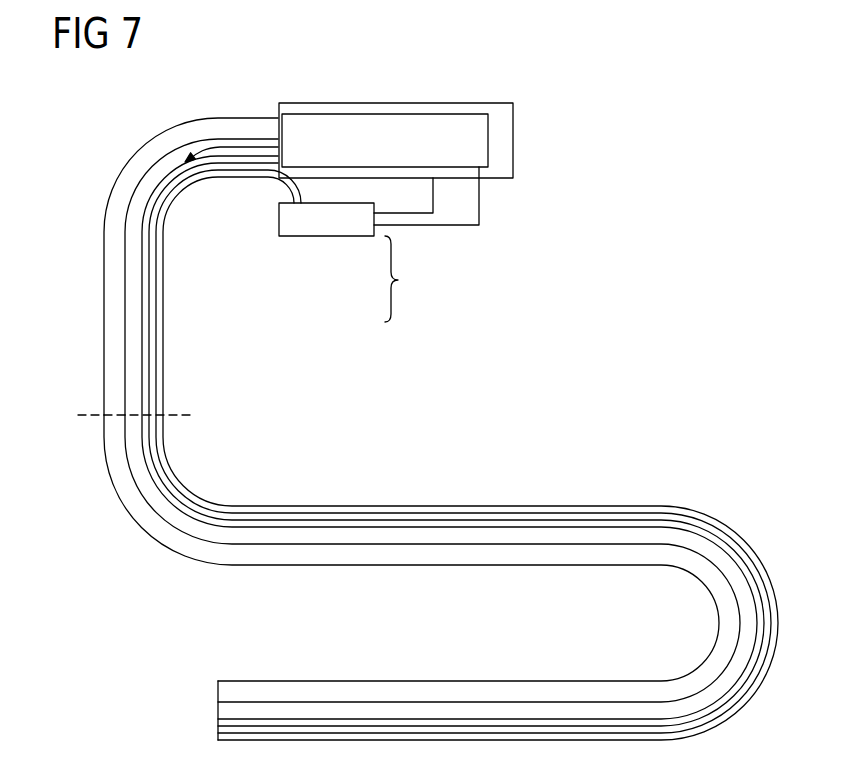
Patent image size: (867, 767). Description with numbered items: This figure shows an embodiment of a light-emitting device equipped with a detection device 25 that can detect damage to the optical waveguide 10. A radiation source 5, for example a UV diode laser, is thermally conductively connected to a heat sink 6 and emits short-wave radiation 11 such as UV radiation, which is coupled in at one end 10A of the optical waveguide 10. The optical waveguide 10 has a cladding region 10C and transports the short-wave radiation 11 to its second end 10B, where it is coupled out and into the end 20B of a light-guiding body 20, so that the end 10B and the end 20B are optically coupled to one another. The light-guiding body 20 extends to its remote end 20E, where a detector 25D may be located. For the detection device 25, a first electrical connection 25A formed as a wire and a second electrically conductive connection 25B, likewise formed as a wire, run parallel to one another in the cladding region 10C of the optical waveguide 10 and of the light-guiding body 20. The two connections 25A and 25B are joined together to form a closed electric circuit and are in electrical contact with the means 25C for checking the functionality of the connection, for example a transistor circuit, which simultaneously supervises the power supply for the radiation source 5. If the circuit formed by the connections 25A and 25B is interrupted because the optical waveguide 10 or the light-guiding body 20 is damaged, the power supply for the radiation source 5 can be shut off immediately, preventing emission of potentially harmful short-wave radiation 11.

The radiation source 5 is at (386, 117).
The heat sink 6 is at (508, 146).
The optical waveguide 10 is at (165, 375).
The end of the optical waveguide 10A is at (265, 138).
The second end of the optical waveguide 10B is at (104, 412).
The cladding region 10C is at (152, 162).
The short-wave radiation 11 is at (215, 145).
The light-guiding body 20 is at (485, 506).
The end of the light-guiding body 20B is at (104, 420).
The remote end of the light-guiding body 20E is at (220, 710).
The detection device 25 is at (407, 279).
The first electrical connection 25A is at (160, 266).
The second electrically conductive connection 25B is at (153, 306).
The means for checking the functionality of the electrically conductive connection 25C is at (325, 237).
The detector 25D is at (238, 555).